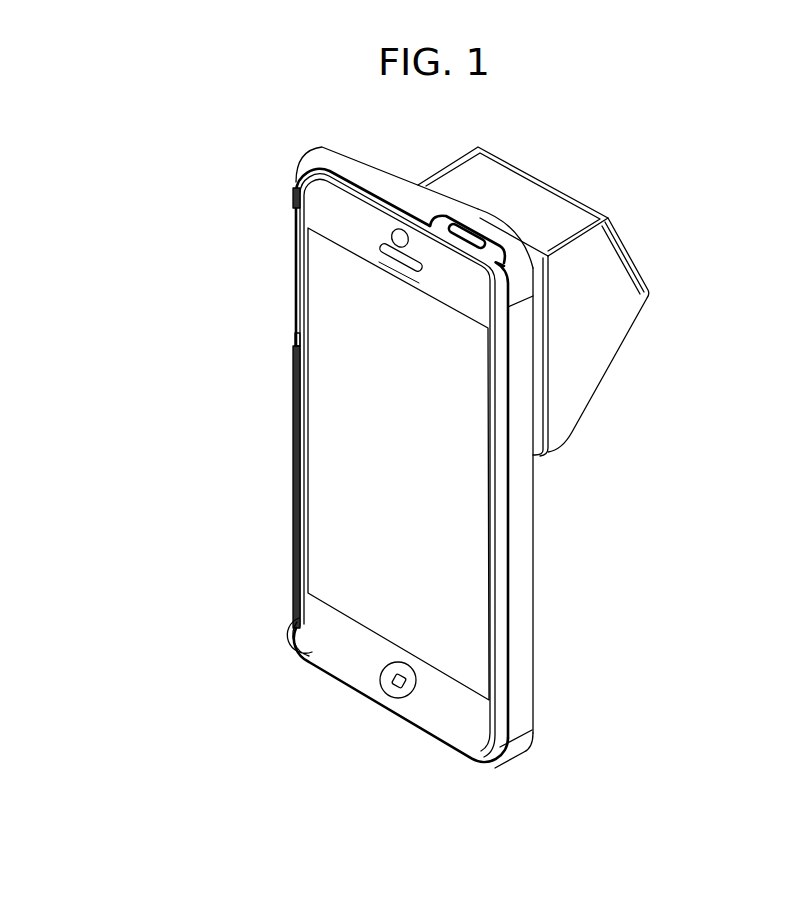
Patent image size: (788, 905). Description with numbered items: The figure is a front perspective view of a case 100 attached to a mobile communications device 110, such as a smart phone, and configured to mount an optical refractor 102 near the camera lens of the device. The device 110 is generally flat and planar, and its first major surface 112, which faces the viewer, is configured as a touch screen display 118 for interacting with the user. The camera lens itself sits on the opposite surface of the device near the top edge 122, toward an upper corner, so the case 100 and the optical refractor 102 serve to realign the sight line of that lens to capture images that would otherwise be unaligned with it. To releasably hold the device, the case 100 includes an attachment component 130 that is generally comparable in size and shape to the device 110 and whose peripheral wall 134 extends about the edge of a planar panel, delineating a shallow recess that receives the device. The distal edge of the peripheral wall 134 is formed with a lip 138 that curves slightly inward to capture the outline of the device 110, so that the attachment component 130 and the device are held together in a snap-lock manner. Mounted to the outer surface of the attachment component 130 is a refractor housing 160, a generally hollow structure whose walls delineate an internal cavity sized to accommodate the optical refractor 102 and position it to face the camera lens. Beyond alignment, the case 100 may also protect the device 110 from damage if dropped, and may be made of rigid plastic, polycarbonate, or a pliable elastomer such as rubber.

The case 100 is at (473, 135).
The optical refractor 102 is at (530, 218).
The mobile communications device 110 is at (303, 283).
The first major surface 112 is at (468, 722).
The touch screen display 118 is at (368, 560).
The top edge 122 is at (453, 230).
The attachment component 130 is at (532, 746).
The peripheral wall 134 is at (522, 523).
The lip 138 is at (295, 340).
The refractor housing 160 is at (649, 292).